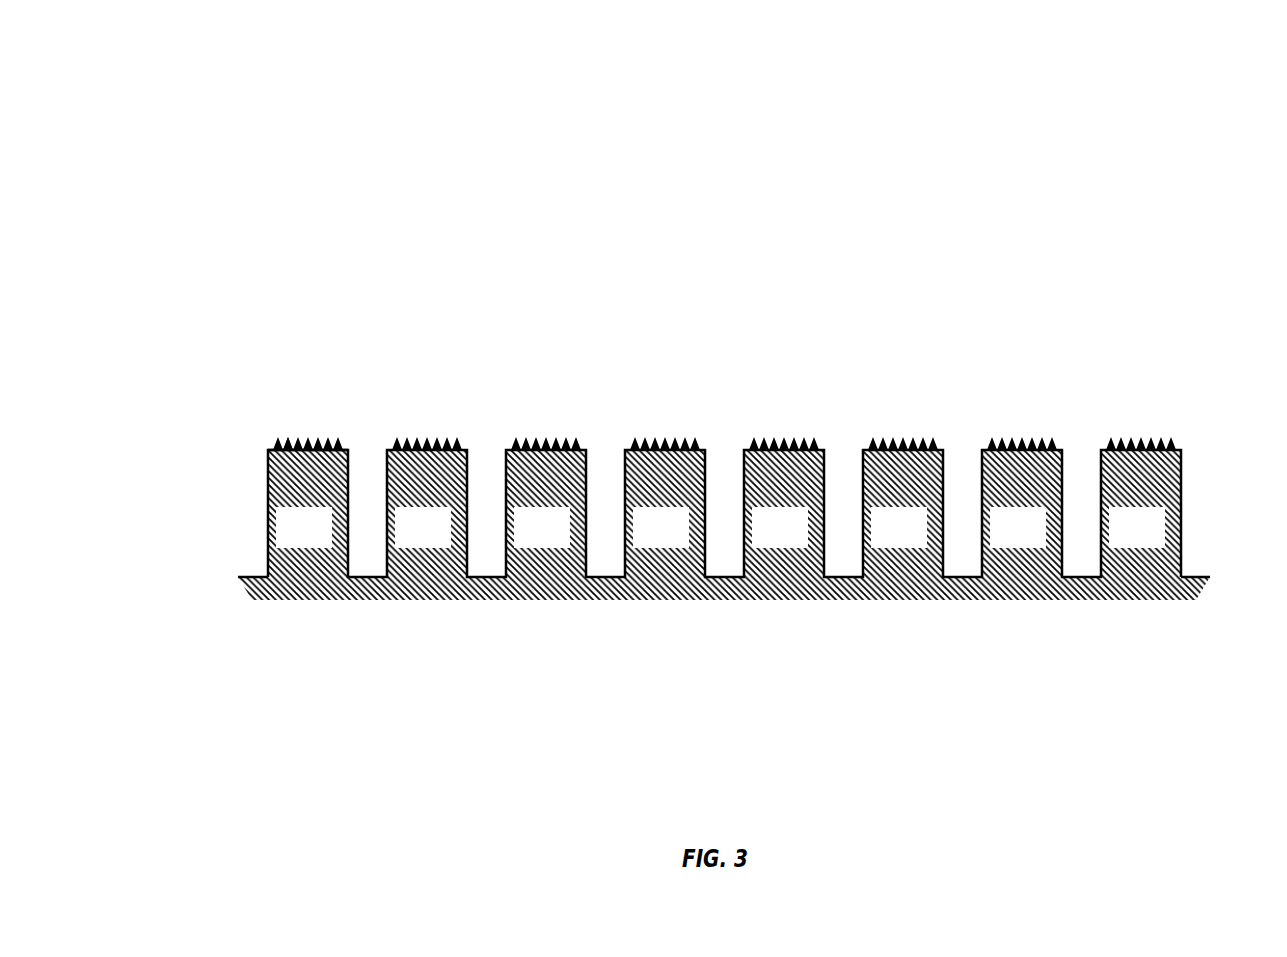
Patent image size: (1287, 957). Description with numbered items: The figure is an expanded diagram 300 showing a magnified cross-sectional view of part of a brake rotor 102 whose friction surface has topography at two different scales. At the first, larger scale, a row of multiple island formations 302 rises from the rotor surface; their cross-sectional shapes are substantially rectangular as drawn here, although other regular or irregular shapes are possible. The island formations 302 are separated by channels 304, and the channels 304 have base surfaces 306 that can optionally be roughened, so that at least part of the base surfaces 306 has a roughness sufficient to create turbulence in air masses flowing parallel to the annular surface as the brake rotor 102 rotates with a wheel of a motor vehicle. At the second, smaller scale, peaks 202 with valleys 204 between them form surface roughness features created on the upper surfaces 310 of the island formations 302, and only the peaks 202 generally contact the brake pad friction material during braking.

The expanded diagram 300 is at (268, 121).
The brake rotor 102 is at (1168, 601).
The island formations 302 is at (724, 513).
The channels 304 is at (360, 518).
The base surfaces 306 is at (371, 570).
The upper surfaces 310 is at (266, 449).
The peaks 202 is at (329, 435).
The valleys 204 is at (286, 439).